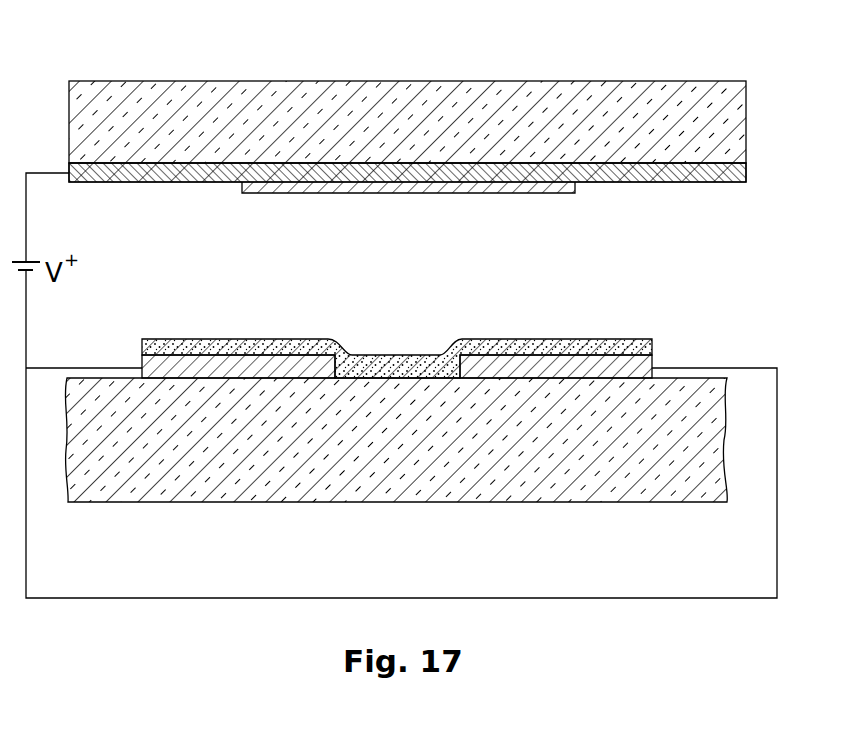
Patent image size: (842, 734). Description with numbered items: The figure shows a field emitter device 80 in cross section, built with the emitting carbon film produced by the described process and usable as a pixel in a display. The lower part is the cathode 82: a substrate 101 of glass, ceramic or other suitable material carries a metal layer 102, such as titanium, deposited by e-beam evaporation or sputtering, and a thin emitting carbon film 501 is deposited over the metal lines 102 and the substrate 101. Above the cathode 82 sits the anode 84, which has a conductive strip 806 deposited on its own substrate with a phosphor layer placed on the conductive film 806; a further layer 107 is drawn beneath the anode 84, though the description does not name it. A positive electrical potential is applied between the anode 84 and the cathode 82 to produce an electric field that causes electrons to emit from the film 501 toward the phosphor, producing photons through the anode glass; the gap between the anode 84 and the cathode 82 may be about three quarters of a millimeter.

The anode 84 is at (407, 124).
The conductive strip 806 is at (709, 182).
The conductive layer 107 is at (543, 194).
The field emitter device 80 is at (440, 404).
The cathode 82 is at (396, 438).
The substrate 101 is at (327, 503).
The metal layer 102 is at (142, 362).
The emitting carbon film 501 is at (378, 355).